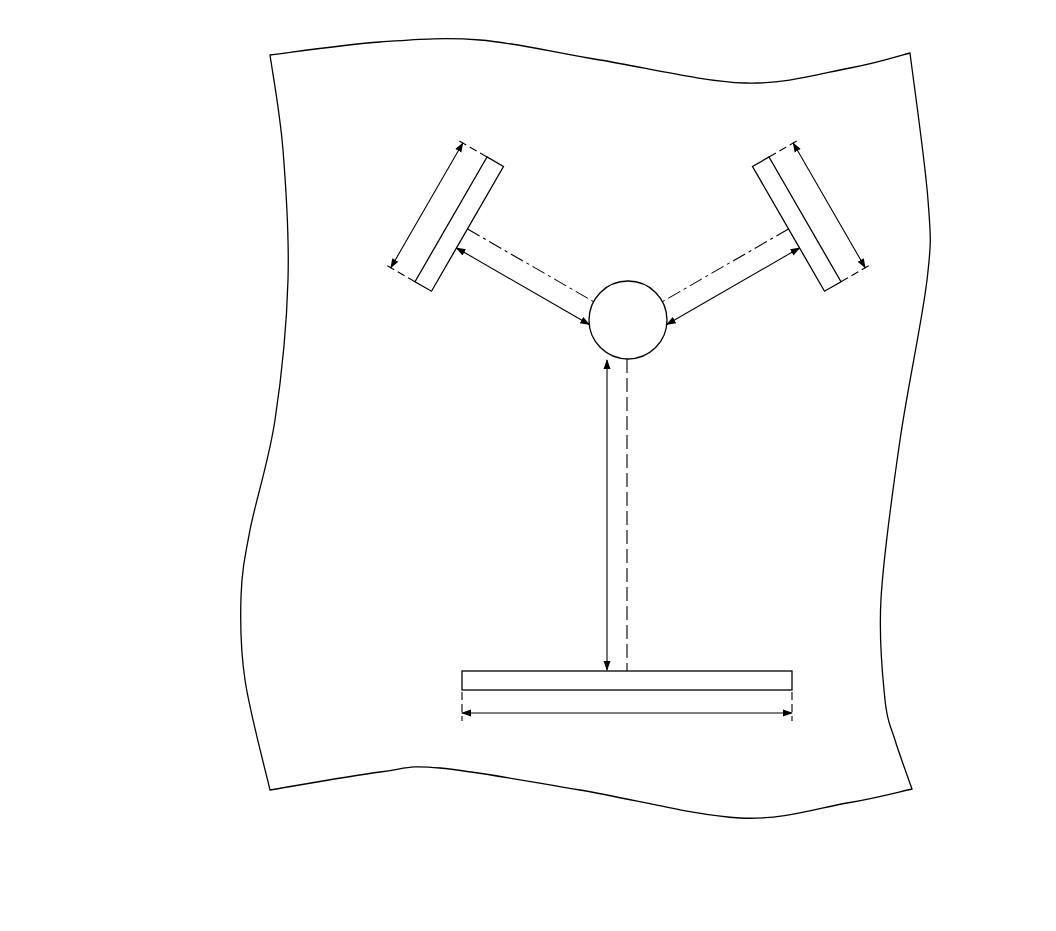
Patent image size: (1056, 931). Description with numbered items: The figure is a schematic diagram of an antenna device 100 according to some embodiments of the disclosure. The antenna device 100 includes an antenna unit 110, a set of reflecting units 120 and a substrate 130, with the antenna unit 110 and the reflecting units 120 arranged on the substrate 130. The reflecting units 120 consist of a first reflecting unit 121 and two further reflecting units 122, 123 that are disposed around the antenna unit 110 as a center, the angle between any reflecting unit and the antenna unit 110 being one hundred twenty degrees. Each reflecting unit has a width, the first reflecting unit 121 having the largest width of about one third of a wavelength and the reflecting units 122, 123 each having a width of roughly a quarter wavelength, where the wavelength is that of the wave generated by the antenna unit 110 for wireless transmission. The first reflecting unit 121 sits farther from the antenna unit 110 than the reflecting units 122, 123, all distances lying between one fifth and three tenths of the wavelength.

The antenna device 100 is at (192, 39).
The antenna unit 110 is at (607, 297).
The reflecting units 120 is at (628, 406).
The first reflecting unit 121 is at (517, 680).
The reflecting unit 122 is at (757, 170).
The reflecting unit 123 is at (502, 172).
The substrate 130 is at (861, 453).